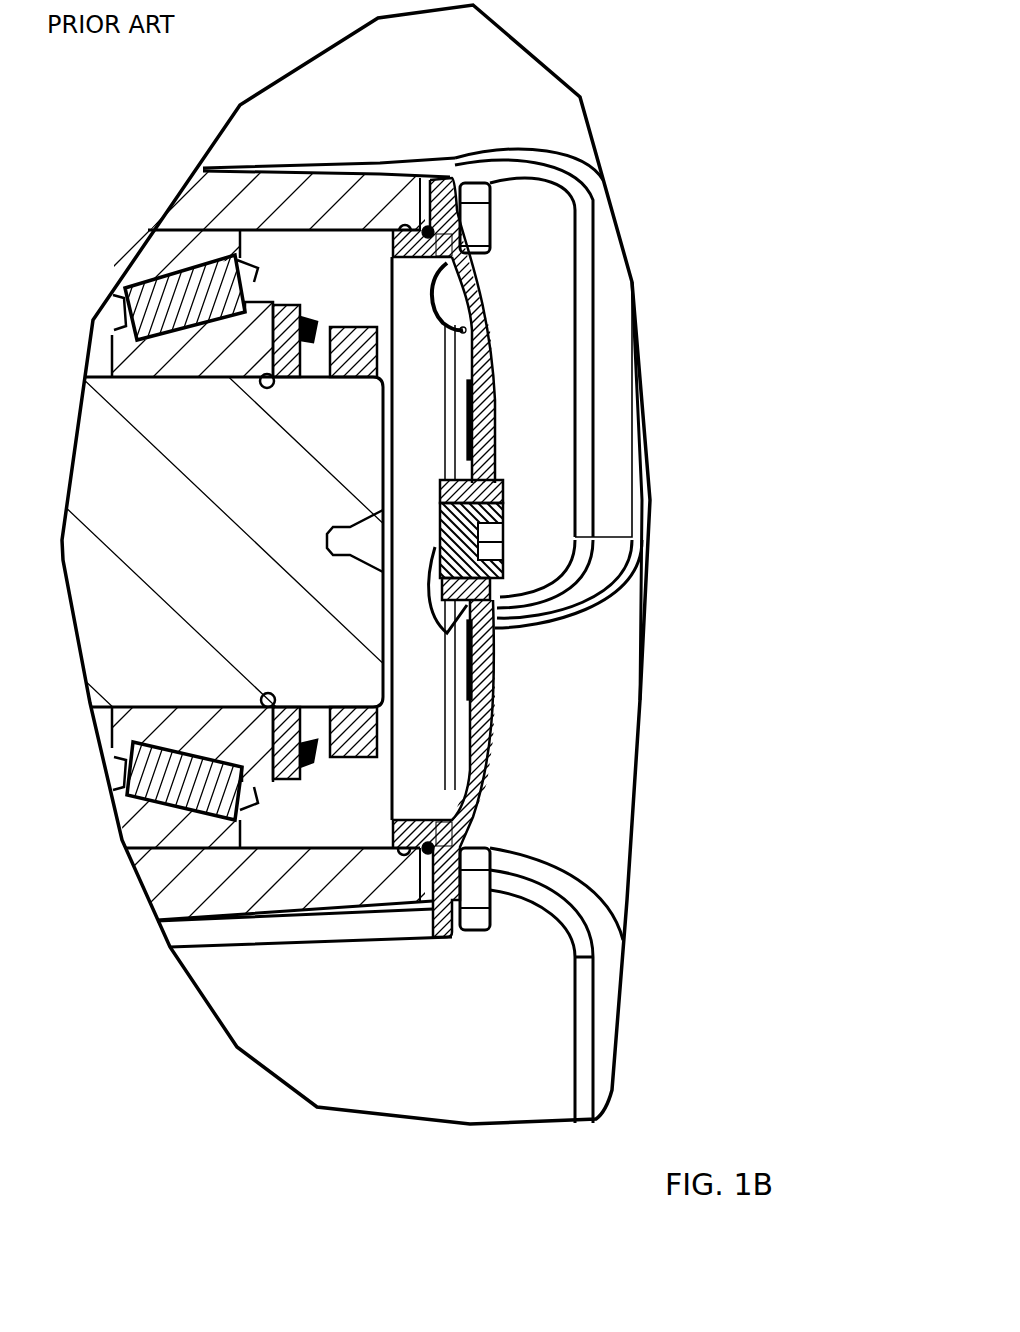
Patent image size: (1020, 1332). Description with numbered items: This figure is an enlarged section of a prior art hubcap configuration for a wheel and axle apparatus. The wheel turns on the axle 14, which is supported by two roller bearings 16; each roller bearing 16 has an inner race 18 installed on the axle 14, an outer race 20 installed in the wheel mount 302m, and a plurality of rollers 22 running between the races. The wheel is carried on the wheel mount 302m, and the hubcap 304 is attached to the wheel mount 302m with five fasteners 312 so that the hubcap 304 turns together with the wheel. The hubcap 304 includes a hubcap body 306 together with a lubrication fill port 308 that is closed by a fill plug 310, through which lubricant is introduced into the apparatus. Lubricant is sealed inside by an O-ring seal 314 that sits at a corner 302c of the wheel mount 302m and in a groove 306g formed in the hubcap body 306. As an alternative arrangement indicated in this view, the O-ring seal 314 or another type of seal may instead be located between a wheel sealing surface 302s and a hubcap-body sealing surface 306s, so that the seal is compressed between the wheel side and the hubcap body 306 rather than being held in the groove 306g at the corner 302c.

The axle 14 is at (206, 554).
The roller bearing 16 is at (202, 540).
The outer race 20 is at (215, 262).
The inner race 18 is at (233, 362).
The rollers 22 is at (185, 310).
The wheel mount 302m is at (315, 216).
The wheel sealing surface 302s is at (388, 228).
The corner 302c is at (416, 211).
The hubcap 304 is at (568, 556).
The hubcap body 306 is at (480, 757).
The groove 306g is at (456, 246).
The hubcap-body sealing surface 306s is at (393, 236).
The lubrication fill port 308 is at (497, 620).
The fill plug 310 is at (497, 600).
The fasteners 312 is at (483, 220).
The O-ring seal 314 is at (428, 226).